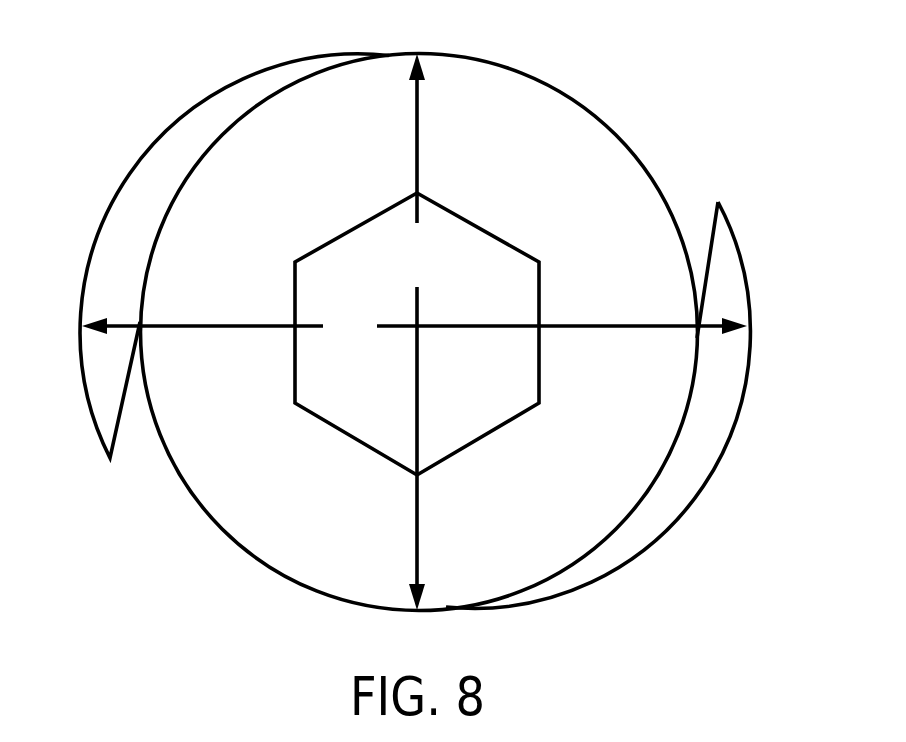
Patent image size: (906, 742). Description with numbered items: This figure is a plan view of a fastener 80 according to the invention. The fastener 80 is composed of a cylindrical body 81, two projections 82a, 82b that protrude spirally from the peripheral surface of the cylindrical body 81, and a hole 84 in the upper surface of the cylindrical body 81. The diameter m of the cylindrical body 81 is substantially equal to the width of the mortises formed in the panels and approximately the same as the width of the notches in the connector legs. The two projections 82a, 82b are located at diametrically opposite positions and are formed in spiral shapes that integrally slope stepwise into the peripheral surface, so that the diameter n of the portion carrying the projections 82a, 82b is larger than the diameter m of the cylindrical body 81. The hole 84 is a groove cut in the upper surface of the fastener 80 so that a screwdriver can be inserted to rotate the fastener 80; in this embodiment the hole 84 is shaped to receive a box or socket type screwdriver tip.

The fastener 80 is at (143, 103).
The cylindrical body 81 is at (580, 122).
The projection 82a is at (723, 400).
The projection 82b is at (102, 258).
The hole 84 is at (355, 243).